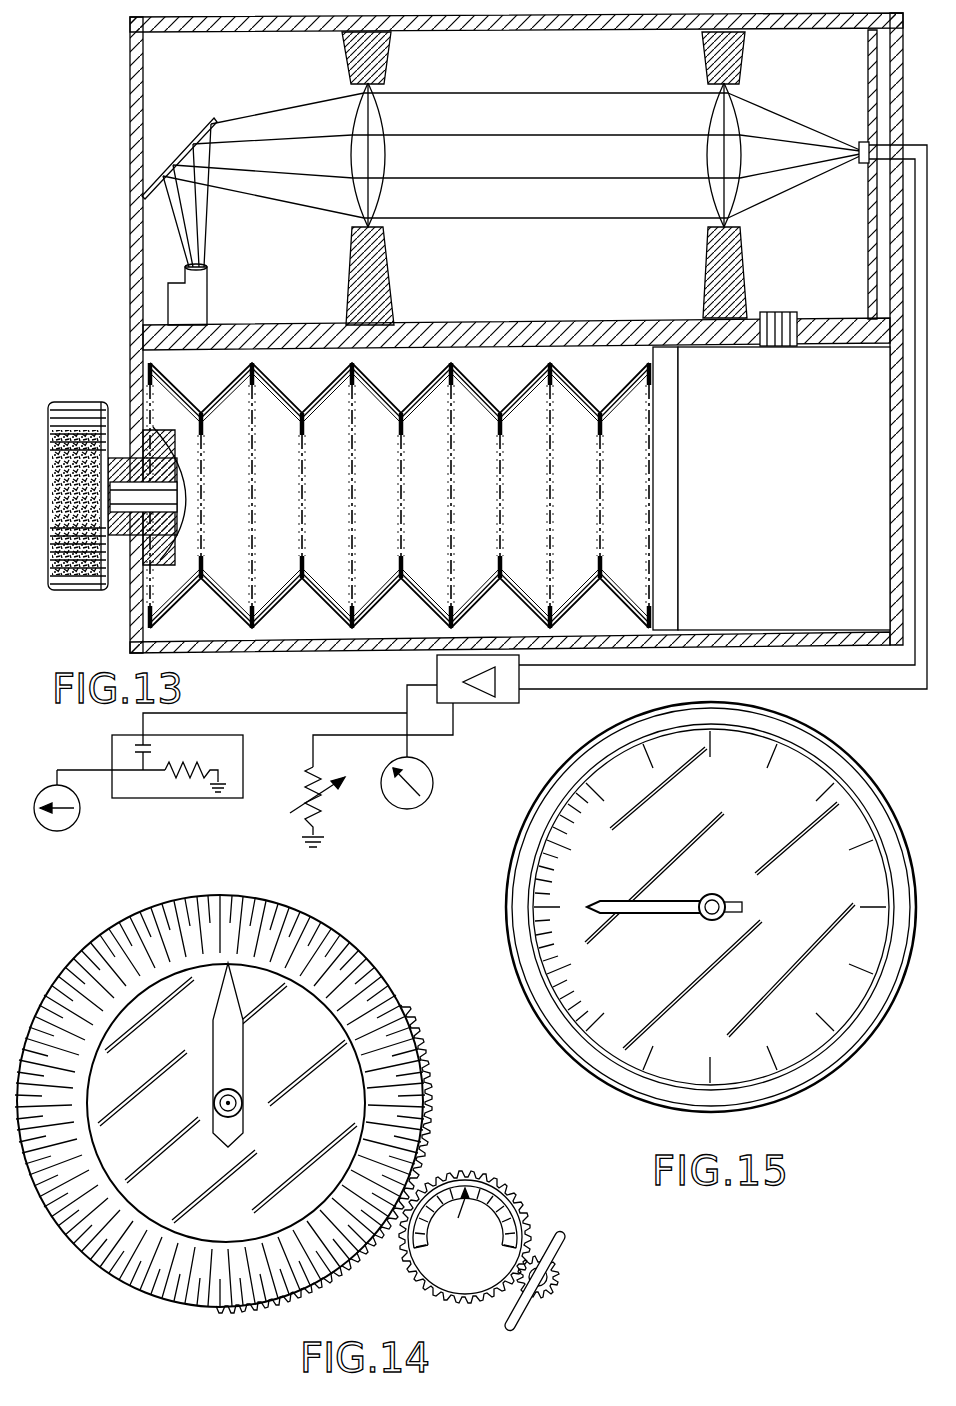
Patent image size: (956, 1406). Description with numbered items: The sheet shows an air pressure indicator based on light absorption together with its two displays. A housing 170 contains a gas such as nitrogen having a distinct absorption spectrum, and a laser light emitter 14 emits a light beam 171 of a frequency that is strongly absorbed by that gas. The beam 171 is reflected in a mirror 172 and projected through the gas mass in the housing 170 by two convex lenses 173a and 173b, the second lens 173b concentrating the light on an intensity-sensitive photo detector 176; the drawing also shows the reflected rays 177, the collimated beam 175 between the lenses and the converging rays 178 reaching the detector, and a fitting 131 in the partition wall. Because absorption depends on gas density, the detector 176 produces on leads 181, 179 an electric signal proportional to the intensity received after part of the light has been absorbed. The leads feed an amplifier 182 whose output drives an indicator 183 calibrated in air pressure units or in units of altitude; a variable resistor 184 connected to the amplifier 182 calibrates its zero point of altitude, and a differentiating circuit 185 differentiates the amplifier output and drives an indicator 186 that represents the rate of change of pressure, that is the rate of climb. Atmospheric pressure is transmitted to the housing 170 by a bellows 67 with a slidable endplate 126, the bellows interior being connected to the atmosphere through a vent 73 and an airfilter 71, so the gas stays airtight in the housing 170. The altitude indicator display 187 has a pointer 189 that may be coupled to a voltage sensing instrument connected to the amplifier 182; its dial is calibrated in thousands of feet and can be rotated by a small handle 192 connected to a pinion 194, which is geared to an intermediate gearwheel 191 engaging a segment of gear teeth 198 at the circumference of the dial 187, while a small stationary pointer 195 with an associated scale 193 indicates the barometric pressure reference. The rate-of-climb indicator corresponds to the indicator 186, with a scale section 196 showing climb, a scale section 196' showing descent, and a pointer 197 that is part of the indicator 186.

In FIG. 13, the laser light emitter 14 is at (198, 300).
In FIG. 13, the bellows 67 is at (488, 518).
In FIG. 13, the airfilter 71 is at (75, 405).
In FIG. 13, the vent 73 is at (175, 498).
In FIG. 13, the slidable endplate 126 is at (672, 500).
In FIG. 13, the fitting 131 is at (778, 347).
In FIG. 13, the housing 170 is at (558, 279).
In FIG. 13, the light beam 171 is at (205, 230).
In FIG. 13, the mirror 172 is at (183, 158).
In FIG. 13, the convex lens 173a is at (383, 160).
In FIG. 13, the convex lens 173b is at (713, 145).
In FIG. 13, the collimated beam 175 is at (536, 177).
In FIG. 13, the photo detector 176 is at (860, 166).
In FIG. 13, the reflected rays 177 is at (296, 176).
In FIG. 13, the converging rays 178 is at (765, 177).
In FIG. 13, the lead 179 is at (833, 667).
In FIG. 13, the lead 181 is at (862, 694).
In FIG. 13, the amplifier 182 is at (490, 705).
In FIG. 13, the indicator 183 is at (433, 777).
In FIG. 13, the variable resistor 184 is at (313, 822).
In FIG. 13, the differentiating circuit 185 is at (245, 764).
In FIG. 13, the indicator 186 is at (78, 820).
In FIG. 14, the altitude indicator display 187 is at (385, 925).
In FIG. 14, the pointer 189 is at (240, 1047).
In FIG. 14, the intermediate gearwheel 191 is at (488, 1178).
In FIG. 14, the handle 192 is at (565, 1243).
In FIG. 14, the scale 193 is at (518, 1202).
In FIG. 14, the pinion 194 is at (548, 1296).
In FIG. 14, the stationary pointer 195 is at (465, 1217).
In FIG. 15, the scale section 196 is at (710, 827).
In FIG. 15, the scale section 196' is at (704, 1001).
In FIG. 15, the pointer 197 is at (653, 913).
In FIG. 14, the gear teeth 198 is at (437, 1085).